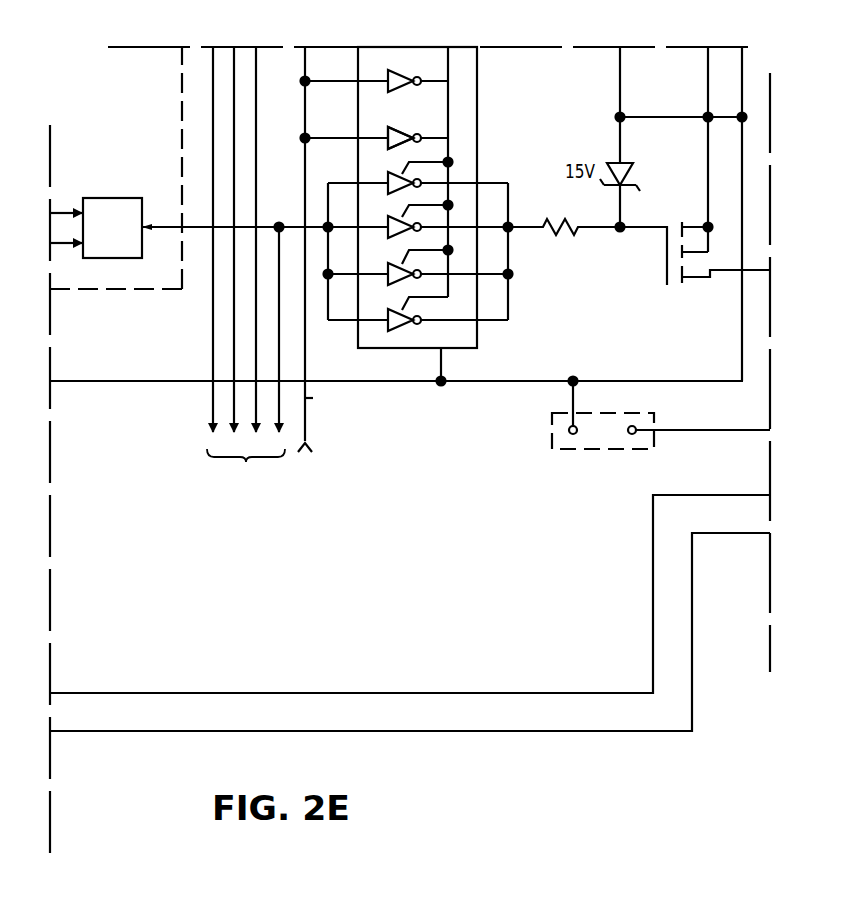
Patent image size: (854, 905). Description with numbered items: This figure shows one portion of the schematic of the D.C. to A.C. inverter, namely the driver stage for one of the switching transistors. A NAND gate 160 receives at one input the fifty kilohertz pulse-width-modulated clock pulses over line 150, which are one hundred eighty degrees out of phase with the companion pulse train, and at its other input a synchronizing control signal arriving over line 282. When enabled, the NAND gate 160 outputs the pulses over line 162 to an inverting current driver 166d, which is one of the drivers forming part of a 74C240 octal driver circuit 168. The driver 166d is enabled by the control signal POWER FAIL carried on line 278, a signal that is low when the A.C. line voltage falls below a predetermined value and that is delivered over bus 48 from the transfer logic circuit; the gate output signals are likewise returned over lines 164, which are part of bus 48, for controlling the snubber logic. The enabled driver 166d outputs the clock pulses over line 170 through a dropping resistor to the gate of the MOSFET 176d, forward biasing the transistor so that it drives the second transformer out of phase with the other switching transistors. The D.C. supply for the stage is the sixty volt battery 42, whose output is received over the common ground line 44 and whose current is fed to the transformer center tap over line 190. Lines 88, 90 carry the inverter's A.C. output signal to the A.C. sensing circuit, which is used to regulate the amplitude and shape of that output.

The input line to NAND gate 282 is at (63, 212).
The NAND gate 160 is at (127, 205).
The line 150 is at (62, 244).
The line 162 is at (198, 230).
The lines 164 is at (213, 402).
The bus 48 is at (212, 268).
The line 278 is at (306, 425).
The inverting current driver 166d is at (405, 131).
The 74C240 octal driver circuit 168 is at (480, 340).
The line 170 is at (525, 230).
The MOSFET 176d is at (671, 212).
The common ground line 44 is at (494, 384).
The 60 volt battery 42 is at (551, 431).
The center tap line 190 is at (688, 429).
The line 88 is at (653, 586).
The line 90 is at (692, 615).